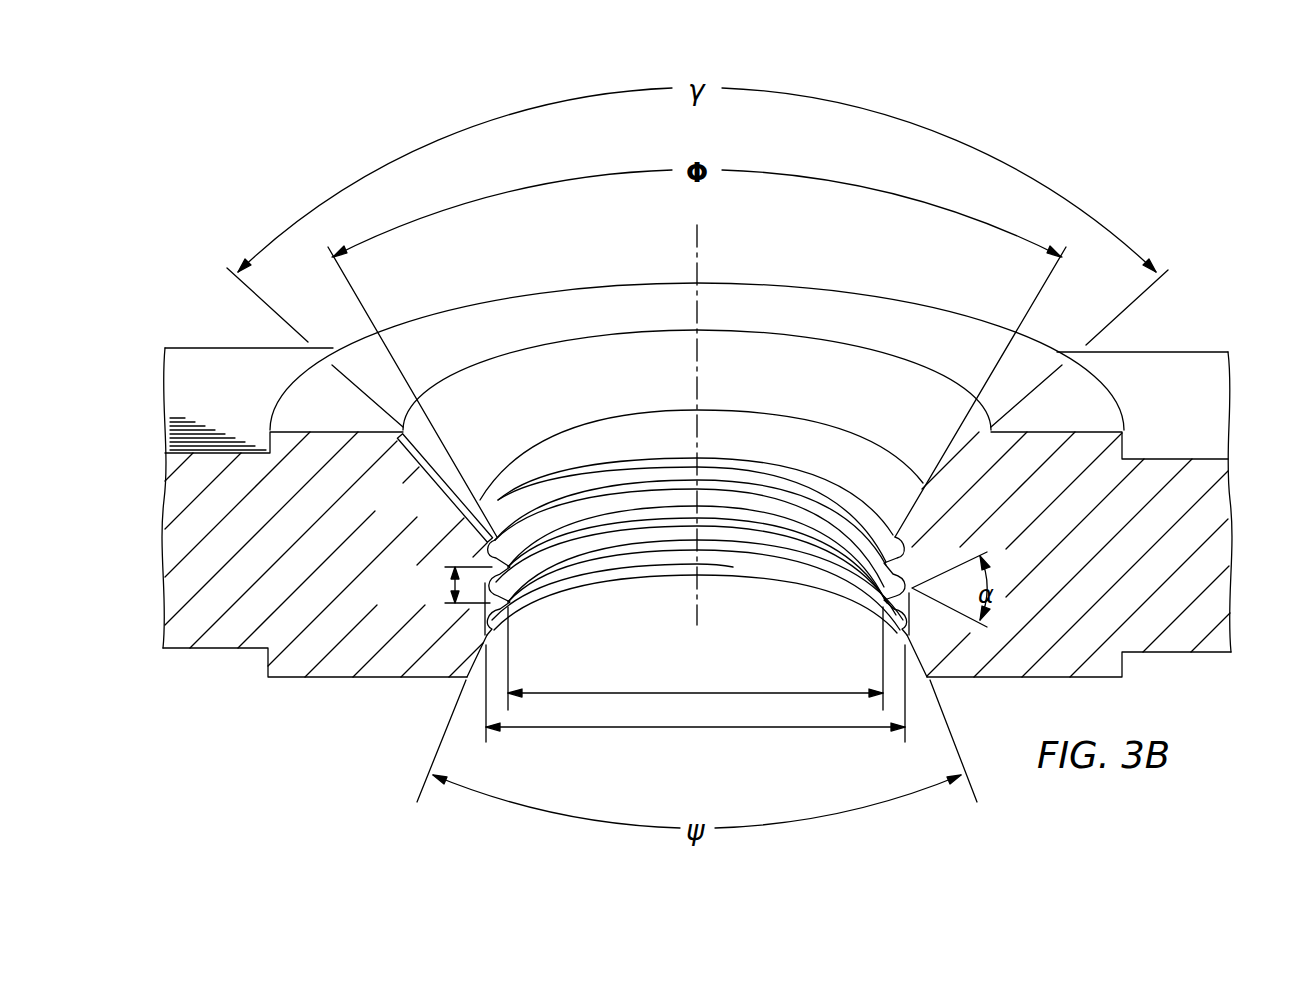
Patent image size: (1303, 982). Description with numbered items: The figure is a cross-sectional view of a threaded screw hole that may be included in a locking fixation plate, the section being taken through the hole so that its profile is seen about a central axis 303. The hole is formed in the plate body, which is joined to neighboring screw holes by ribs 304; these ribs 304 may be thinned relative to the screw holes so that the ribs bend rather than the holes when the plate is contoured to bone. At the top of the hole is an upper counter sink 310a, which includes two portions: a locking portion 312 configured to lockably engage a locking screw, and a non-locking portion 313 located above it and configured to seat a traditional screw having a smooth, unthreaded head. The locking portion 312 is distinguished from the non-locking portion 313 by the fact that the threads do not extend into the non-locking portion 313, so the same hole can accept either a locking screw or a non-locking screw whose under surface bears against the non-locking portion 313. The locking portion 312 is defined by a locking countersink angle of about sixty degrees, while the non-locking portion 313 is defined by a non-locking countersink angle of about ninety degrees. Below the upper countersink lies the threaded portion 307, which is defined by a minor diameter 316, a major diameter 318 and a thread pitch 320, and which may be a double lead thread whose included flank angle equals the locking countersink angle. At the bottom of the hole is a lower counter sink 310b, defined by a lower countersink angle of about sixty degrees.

The central axis 303 is at (701, 237).
The ribs 304 is at (1207, 367).
The threaded portion 307 is at (797, 478).
The upper counter sink 310a is at (406, 480).
The lower counter sink 310b is at (478, 663).
The locking portion 312 is at (496, 499).
The non-locking portion 313 is at (422, 433).
The minor diameter 316 is at (738, 690).
The major diameter 318 is at (740, 729).
The thread pitch 320 is at (450, 590).